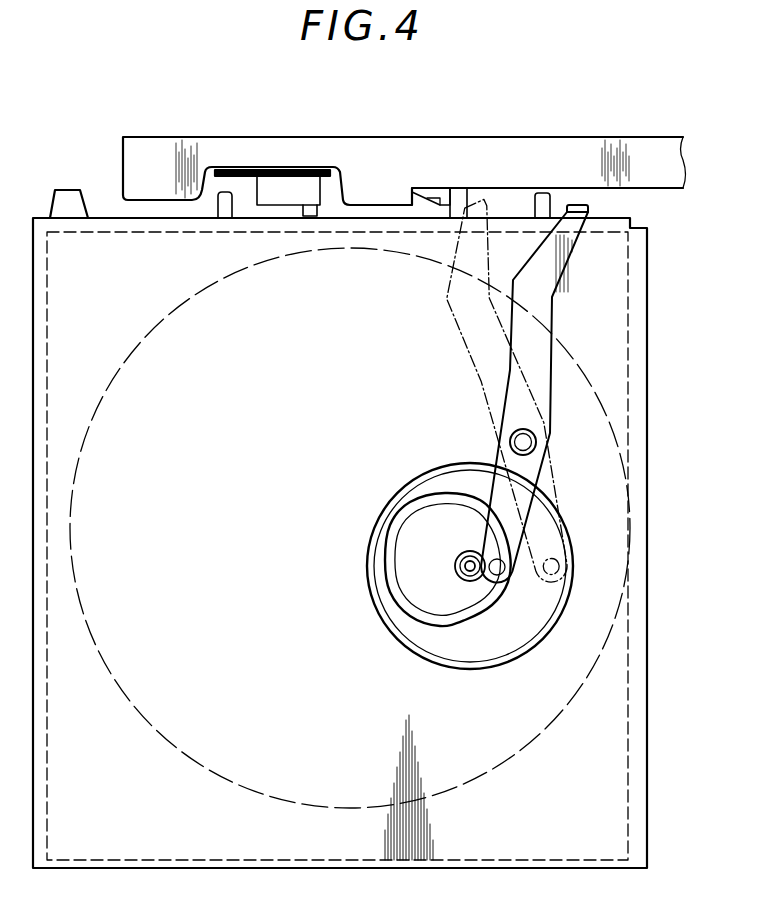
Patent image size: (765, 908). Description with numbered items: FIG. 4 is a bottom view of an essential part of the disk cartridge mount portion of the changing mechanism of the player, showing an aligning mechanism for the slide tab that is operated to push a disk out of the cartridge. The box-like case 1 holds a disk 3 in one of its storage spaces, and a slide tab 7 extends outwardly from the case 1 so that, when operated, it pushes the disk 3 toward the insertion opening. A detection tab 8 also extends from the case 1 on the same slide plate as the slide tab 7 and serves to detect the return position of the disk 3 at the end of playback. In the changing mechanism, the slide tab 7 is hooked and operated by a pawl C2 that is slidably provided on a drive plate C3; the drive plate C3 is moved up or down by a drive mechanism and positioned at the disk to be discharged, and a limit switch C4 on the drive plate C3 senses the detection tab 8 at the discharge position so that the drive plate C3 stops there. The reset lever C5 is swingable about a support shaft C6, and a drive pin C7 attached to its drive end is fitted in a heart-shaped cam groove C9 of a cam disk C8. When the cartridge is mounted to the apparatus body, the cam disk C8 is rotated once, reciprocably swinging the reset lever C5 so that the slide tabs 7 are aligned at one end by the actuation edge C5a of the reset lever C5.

The case 1 is at (630, 462).
The disk 3 is at (128, 705).
The slide tab 7 is at (538, 192).
The detection tab 8 is at (310, 205).
The pawl C2 is at (443, 200).
The drive plate C3 is at (480, 153).
The limit switch C4 is at (290, 195).
The reset lever C5 is at (518, 330).
The actuation edge C5a is at (580, 203).
The support shaft C6 is at (510, 438).
The drive pin C7 is at (545, 568).
The cam disk C8 is at (378, 568).
The heart-shaped cam groove C9 is at (413, 598).